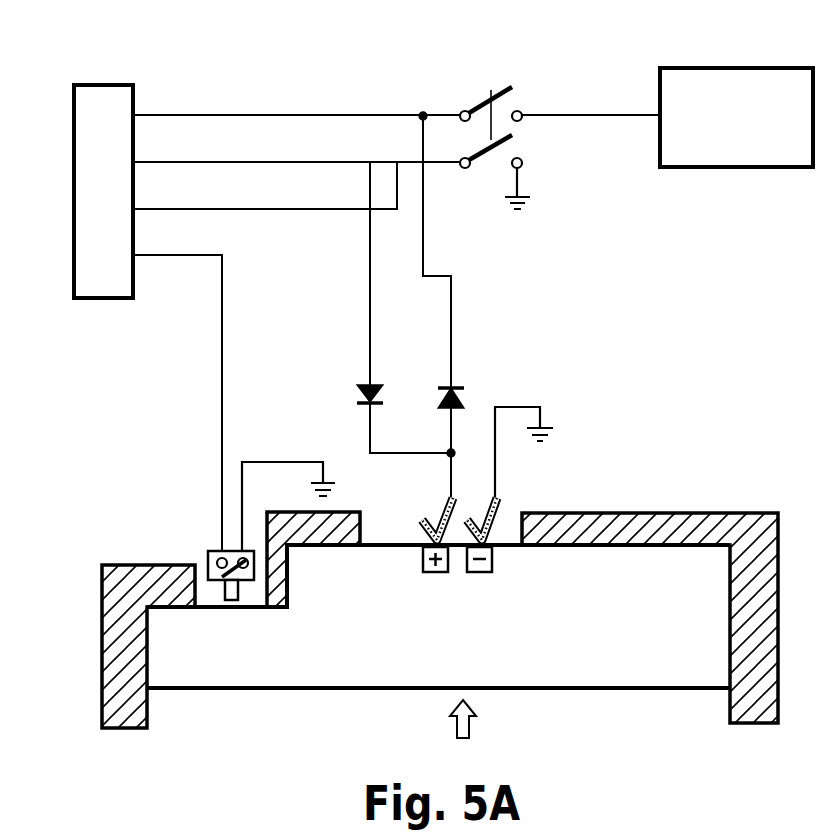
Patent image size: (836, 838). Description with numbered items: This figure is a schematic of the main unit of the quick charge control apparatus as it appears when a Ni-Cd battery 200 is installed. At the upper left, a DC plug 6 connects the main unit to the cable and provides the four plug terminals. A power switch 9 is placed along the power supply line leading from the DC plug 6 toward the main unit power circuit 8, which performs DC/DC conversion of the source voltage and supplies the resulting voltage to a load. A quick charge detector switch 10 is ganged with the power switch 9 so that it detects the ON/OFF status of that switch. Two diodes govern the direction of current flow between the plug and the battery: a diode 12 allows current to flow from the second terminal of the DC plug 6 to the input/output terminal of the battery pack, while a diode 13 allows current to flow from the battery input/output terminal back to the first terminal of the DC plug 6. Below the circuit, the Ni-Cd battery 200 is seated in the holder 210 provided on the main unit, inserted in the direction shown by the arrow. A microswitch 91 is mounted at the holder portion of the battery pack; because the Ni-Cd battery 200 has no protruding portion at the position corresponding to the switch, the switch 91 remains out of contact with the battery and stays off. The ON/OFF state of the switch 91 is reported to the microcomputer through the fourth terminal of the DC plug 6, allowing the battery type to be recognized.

The DC plug 6 is at (103, 85).
The main unit power circuit 8 is at (730, 68).
The power switch 9 is at (490, 89).
The quick charge detector switch 10 is at (512, 143).
The diode 12 is at (350, 393).
The diode 13 is at (473, 400).
The microswitch 91 is at (208, 551).
The Ni-Cd battery 200 is at (600, 690).
The holder 210 is at (102, 600).